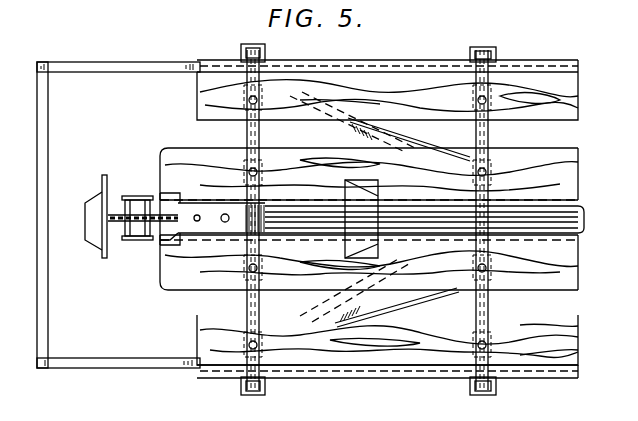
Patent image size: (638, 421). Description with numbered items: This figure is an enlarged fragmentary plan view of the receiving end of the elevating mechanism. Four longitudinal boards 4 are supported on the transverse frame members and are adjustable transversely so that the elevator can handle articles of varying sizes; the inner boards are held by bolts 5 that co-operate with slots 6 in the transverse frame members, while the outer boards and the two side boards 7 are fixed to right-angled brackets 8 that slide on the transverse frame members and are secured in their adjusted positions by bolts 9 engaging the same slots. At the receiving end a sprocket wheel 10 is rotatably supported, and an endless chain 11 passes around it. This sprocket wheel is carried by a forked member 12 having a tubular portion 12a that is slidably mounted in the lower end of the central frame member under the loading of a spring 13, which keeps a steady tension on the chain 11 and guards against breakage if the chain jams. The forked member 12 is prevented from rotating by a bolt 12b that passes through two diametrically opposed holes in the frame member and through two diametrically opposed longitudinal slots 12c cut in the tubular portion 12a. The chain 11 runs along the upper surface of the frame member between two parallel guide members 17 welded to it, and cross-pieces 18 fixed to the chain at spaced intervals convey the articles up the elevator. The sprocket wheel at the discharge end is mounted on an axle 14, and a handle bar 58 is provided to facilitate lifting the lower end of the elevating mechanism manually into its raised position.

The boards 4 is at (560, 158).
The bolts 5 is at (250, 171).
The slots 6 is at (257, 131).
The side boards 7 is at (292, 62).
The right-angled brackets 8 is at (497, 54).
The bolts 9 is at (215, 98).
The sprocket wheel 10 is at (140, 198).
The endless chain 11 is at (118, 224).
The forked member 12 is at (168, 200).
The tubular portion 12a is at (190, 203).
The bolt 12b is at (222, 236).
The slots 12c is at (215, 226).
The spring 13 is at (262, 238).
The axle 14 is at (560, 318).
The guide members 17 is at (578, 214).
The cross-pieces 18 is at (100, 252).
The handle bar 58 is at (40, 237).